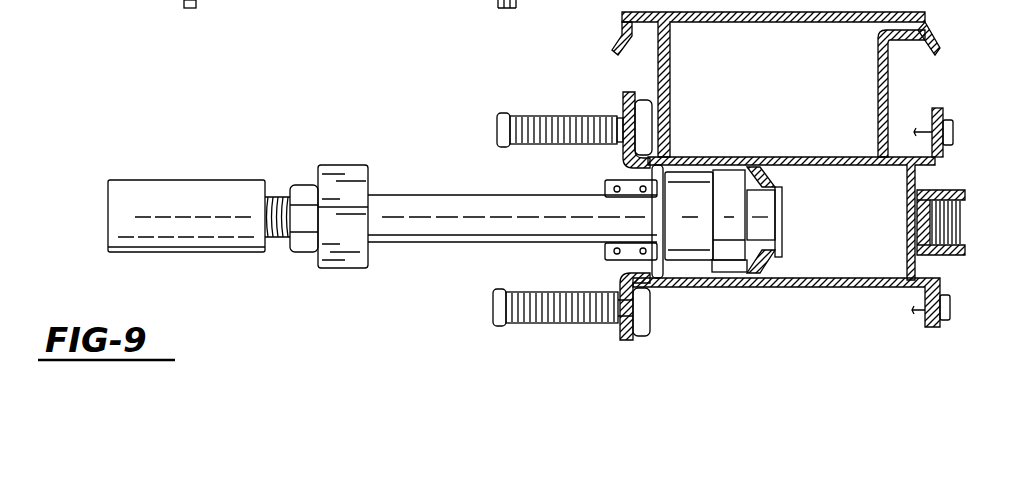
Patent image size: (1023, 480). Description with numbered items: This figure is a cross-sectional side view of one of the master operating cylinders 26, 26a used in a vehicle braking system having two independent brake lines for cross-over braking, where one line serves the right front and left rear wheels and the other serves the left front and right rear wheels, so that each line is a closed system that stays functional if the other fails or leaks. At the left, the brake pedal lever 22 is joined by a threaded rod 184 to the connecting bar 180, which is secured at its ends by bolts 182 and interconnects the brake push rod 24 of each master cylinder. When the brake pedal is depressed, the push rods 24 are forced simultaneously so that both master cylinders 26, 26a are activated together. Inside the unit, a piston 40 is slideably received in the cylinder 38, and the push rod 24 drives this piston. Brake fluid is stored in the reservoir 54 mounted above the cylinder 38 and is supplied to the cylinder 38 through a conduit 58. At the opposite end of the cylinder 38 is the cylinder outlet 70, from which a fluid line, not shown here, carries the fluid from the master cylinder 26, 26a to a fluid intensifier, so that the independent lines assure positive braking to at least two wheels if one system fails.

The brake pedal lever 22 is at (142, 180).
The brake push rod 24 is at (425, 243).
The master operating cylinder 26 is at (762, 290).
The master operating cylinder 26a is at (543, 132).
The cylinder 38 is at (878, 290).
The piston 40 is at (710, 285).
The reservoir 54 is at (888, 78).
The conduit 58 is at (790, 166).
The cylinder outlet 70 is at (970, 213).
The connecting bar 180 is at (347, 166).
The bolt 182 is at (302, 187).
The threaded rod 184 is at (281, 238).